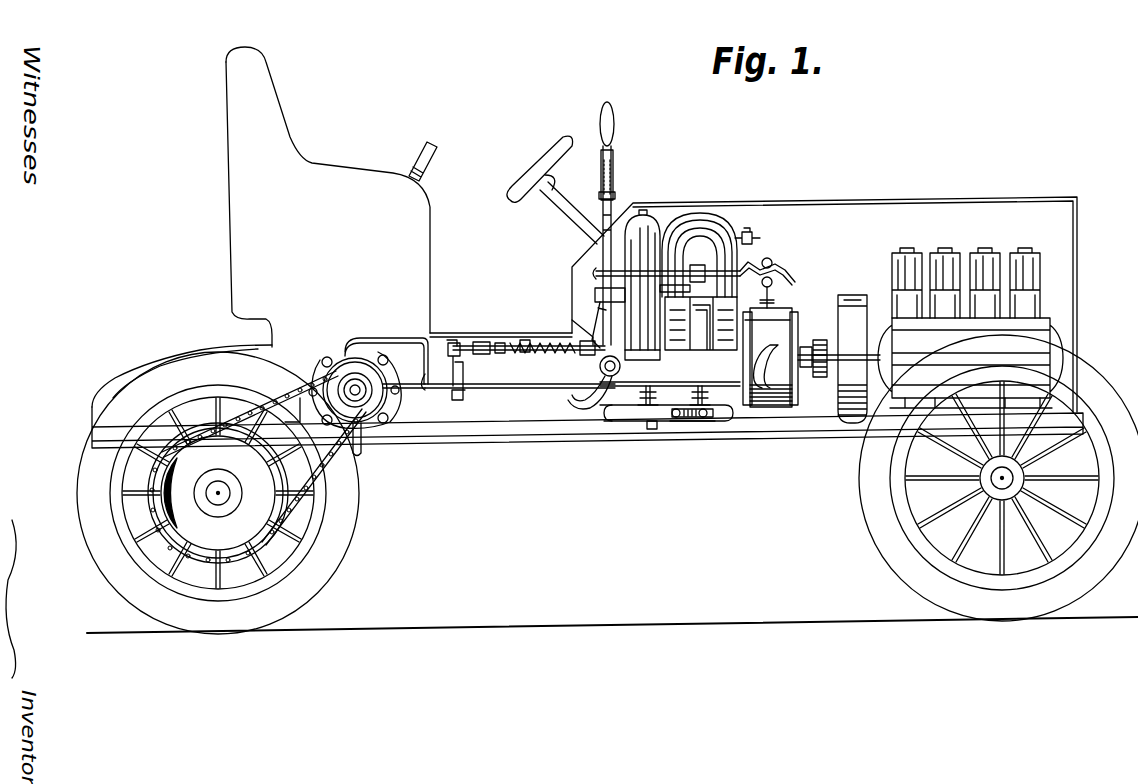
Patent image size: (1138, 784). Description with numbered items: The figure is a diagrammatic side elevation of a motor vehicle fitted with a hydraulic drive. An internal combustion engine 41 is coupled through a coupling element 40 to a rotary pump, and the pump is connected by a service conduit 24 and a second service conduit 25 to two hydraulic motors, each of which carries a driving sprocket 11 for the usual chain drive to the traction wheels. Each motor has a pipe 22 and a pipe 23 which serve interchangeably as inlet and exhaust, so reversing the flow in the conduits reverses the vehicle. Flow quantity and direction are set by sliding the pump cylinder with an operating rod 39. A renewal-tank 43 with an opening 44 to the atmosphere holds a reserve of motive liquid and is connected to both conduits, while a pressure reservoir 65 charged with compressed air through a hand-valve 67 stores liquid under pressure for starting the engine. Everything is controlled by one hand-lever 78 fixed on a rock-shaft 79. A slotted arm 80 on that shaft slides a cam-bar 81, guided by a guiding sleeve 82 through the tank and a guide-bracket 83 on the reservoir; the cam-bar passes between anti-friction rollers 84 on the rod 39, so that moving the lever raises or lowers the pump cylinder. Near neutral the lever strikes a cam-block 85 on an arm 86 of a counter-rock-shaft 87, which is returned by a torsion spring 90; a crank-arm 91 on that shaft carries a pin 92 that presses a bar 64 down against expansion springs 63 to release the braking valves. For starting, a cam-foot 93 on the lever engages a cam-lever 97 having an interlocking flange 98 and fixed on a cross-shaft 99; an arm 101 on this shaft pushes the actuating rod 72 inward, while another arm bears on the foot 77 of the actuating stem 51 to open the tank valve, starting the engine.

The driving sprocket 11 is at (332, 382).
The pipe 22 is at (360, 452).
The pipe 23 is at (357, 338).
The service conduit 24 is at (411, 412).
The second service conduit 25 is at (503, 390).
The operating rod 39 is at (773, 296).
The coupling element 40 is at (818, 336).
The internal combustion engine 41 is at (1065, 334).
The renewal-tank 43 is at (574, 238).
The opening 44 is at (643, 212).
The actuating stem 51 is at (653, 398).
The expansion spring 63 is at (452, 352).
The bar 64 is at (460, 358).
The pressure reservoir 65 is at (727, 222).
The stopcock or hand-valve 67 is at (754, 238).
The actuating rod 72 is at (708, 412).
The L or foot 77 is at (654, 430).
The hand-lever 78 is at (613, 130).
The rock-shaft 79 is at (600, 366).
The slotted arm 80 is at (598, 314).
The cam-bar 81 is at (680, 290).
The guiding sleeve 82 is at (594, 273).
The guide-bracket 83 is at (698, 268).
The anti-friction rollers 84 is at (773, 263).
The cam-block 85 is at (628, 305).
The arm 86 is at (592, 304).
The counter-rock-shaft 87 is at (524, 342).
The torsion spring 90 is at (540, 352).
The crank-arm 91 is at (500, 353).
The pin 92 is at (452, 336).
The cam-foot 93 is at (570, 402).
The cam-lever 97 is at (607, 421).
The interlocking flange 98 is at (627, 422).
The cross-shaft 99 is at (682, 421).
The arm 101 is at (690, 419).